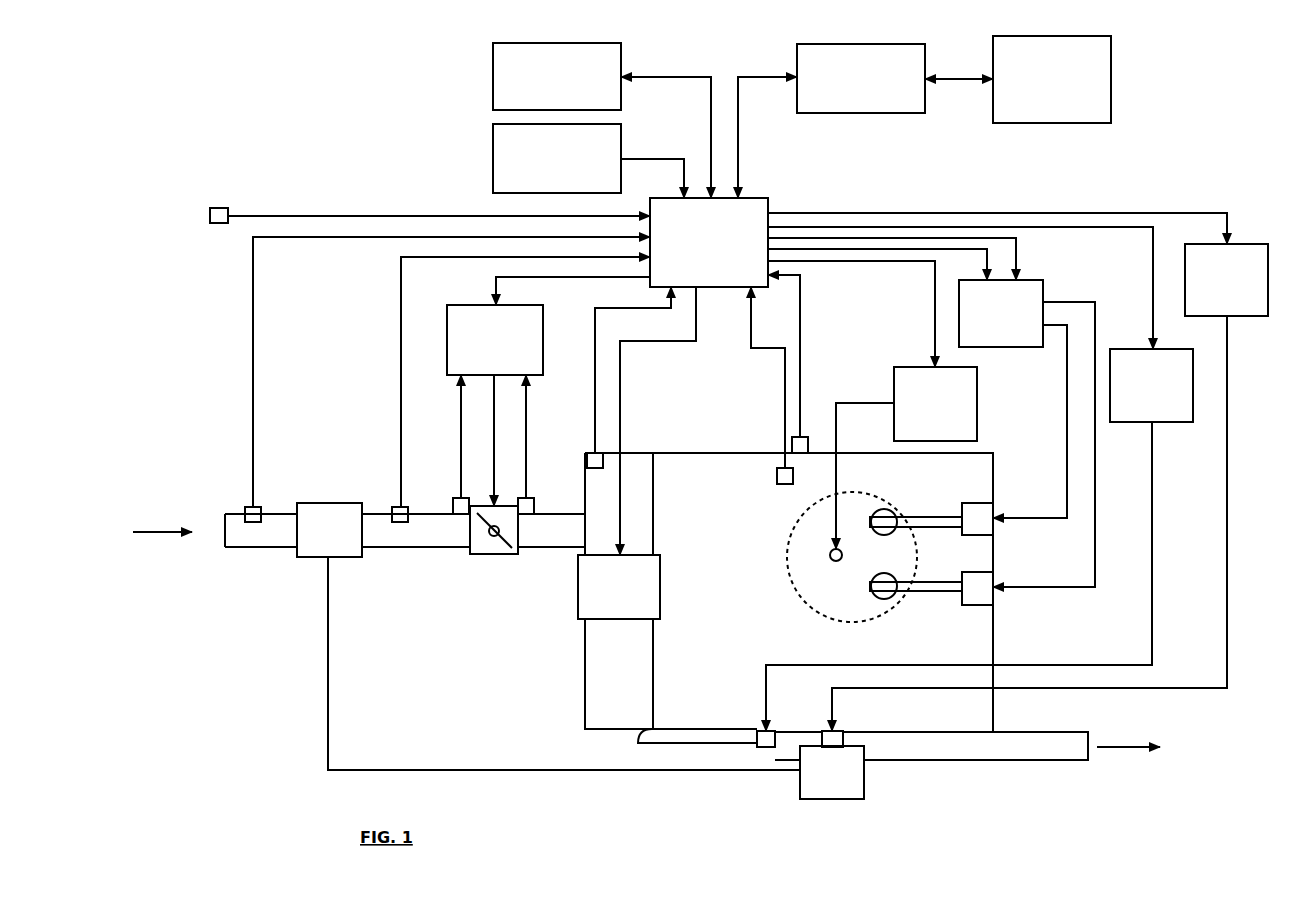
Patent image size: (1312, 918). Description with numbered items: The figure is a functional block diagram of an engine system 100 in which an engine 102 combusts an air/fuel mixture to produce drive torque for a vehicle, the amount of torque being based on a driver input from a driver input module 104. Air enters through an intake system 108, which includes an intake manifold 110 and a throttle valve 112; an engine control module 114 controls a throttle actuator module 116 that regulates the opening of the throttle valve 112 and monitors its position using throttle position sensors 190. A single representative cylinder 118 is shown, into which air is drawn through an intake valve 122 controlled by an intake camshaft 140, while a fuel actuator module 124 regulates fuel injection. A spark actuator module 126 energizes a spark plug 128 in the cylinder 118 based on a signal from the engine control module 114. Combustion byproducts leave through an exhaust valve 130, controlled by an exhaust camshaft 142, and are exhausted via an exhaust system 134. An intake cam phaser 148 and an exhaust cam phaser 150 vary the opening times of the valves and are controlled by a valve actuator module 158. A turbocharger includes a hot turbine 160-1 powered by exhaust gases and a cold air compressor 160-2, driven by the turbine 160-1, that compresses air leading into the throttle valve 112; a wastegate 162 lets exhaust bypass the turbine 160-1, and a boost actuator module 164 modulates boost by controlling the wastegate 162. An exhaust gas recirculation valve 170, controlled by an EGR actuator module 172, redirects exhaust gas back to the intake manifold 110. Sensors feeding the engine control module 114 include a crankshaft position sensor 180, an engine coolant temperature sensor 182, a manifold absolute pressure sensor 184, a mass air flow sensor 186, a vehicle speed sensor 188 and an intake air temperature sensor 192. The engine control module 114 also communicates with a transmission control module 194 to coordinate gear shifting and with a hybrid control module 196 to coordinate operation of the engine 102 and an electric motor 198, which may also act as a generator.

The engine system 100 is at (203, 98).
The engine 102 is at (993, 465).
The driver input module 104 is at (493, 157).
The intake system 108 is at (455, 668).
The intake manifold 110 is at (585, 668).
The throttle valve 112 is at (490, 554).
The engine control module 114 is at (768, 201).
The throttle actuator module 116 is at (464, 304).
The cylinder 118 is at (810, 610).
The intake valve 122 is at (880, 509).
The fuel actuator module 124 is at (635, 619).
The spark actuator module 126 is at (977, 405).
The spark plug 128 is at (830, 555).
The exhaust valve 130 is at (880, 600).
The exhaust system 134 is at (1030, 802).
The intake camshaft 140 is at (937, 517).
The exhaust camshaft 142 is at (940, 592).
The intake cam phaser 148 is at (978, 503).
The exhaust cam phaser 150 is at (980, 606).
The valve actuator module 158 is at (1043, 290).
The turbine 160-1 is at (864, 783).
The cold air compressor 160-2 is at (315, 557).
The wastegate 162 is at (843, 731).
The boost actuator module 164 is at (1245, 316).
The exhaust gas recirculation valve 170 is at (765, 747).
The EGR actuator module 172 is at (1168, 422).
The crankshaft position sensor 180 is at (805, 437).
The engine coolant temperature sensor 182 is at (785, 484).
The manifold absolute pressure sensor 184 is at (591, 453).
The mass air flow sensor 186 is at (399, 505).
The vehicle speed sensor 188 is at (210, 212).
The throttle position sensors 190 is at (461, 514).
The intake air temperature sensor 192 is at (250, 507).
The transmission control module 194 is at (493, 75).
The hybrid control module 196 is at (861, 113).
The electric motor 198 is at (1063, 123).